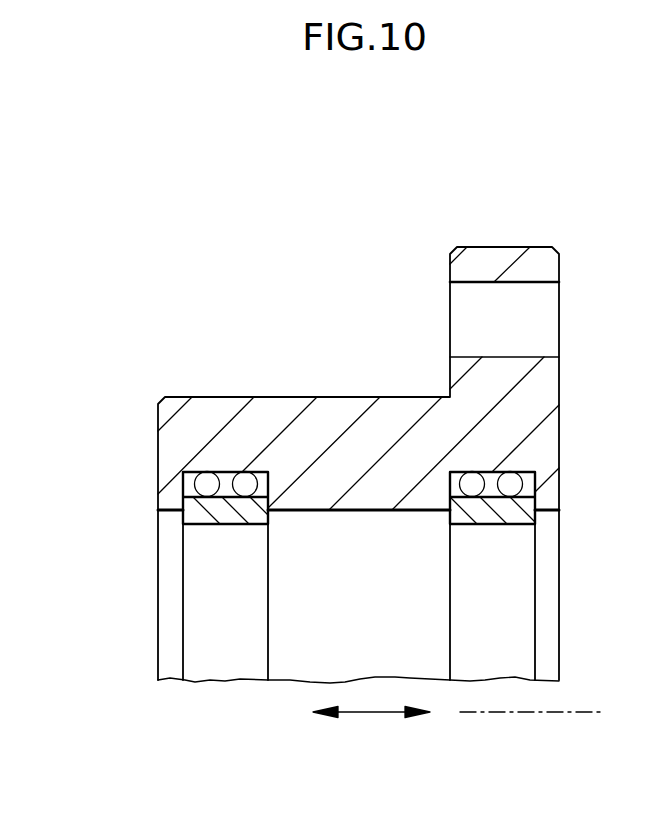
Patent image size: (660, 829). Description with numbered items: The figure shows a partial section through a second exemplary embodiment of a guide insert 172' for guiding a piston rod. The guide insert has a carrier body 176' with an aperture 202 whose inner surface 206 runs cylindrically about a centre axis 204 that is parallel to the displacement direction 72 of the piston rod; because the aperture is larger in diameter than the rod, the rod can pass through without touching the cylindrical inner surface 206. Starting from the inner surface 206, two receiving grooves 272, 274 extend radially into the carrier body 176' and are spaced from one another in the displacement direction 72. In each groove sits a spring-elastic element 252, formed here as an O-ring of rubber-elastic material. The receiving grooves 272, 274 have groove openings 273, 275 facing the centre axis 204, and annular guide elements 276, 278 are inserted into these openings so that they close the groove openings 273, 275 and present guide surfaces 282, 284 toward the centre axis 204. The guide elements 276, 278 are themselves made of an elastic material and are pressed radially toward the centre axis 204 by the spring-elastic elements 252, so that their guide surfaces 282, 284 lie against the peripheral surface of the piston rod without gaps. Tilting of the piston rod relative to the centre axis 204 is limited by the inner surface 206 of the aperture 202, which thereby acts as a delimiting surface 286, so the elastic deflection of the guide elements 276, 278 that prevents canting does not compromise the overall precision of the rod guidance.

The guide insert 172' is at (358, 313).
The carrier body 176' is at (358, 378).
The aperture 202 is at (377, 512).
The inner surface 206 is at (312, 512).
The spring-elastic elements 252 is at (208, 487).
The receiving groove 272 is at (236, 478).
The receiving groove 274 is at (490, 485).
The groove opening 273 is at (266, 512).
The groove opening 275 is at (452, 508).
The guide surface 282 is at (197, 562).
The guide surface 284 is at (520, 560).
The annular guide element 276 is at (230, 647).
The annular guide element 278 is at (488, 647).
The delimiting surface 286 is at (292, 657).
The displacement direction 72 is at (372, 714).
The centre axis 204 is at (527, 713).